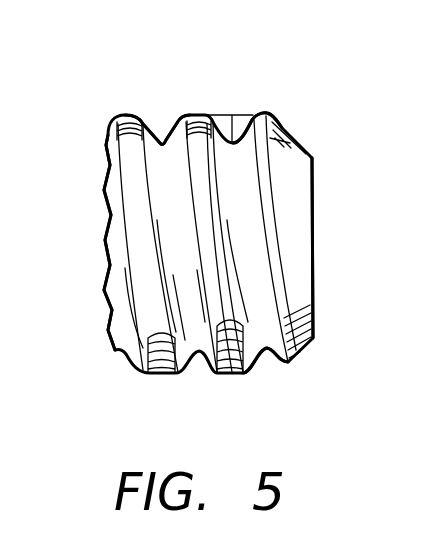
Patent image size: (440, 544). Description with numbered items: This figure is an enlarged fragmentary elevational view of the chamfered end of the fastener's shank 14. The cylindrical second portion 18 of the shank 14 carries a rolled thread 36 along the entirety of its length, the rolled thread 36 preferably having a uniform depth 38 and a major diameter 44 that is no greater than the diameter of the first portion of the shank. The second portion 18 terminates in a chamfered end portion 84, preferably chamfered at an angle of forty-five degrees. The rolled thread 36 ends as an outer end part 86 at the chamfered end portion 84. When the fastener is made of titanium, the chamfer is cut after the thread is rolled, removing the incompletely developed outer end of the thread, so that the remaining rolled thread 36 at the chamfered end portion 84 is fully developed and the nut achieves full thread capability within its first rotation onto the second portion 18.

The shank 14 is at (194, 117).
The rolled thread 36 is at (160, 158).
The uniform depth 38 is at (243, 130).
The chamfered end portion 84 is at (290, 232).
The outer end part 86 is at (268, 350).
The major diameter 44 is at (228, 318).
The second portion 18 is at (115, 305).